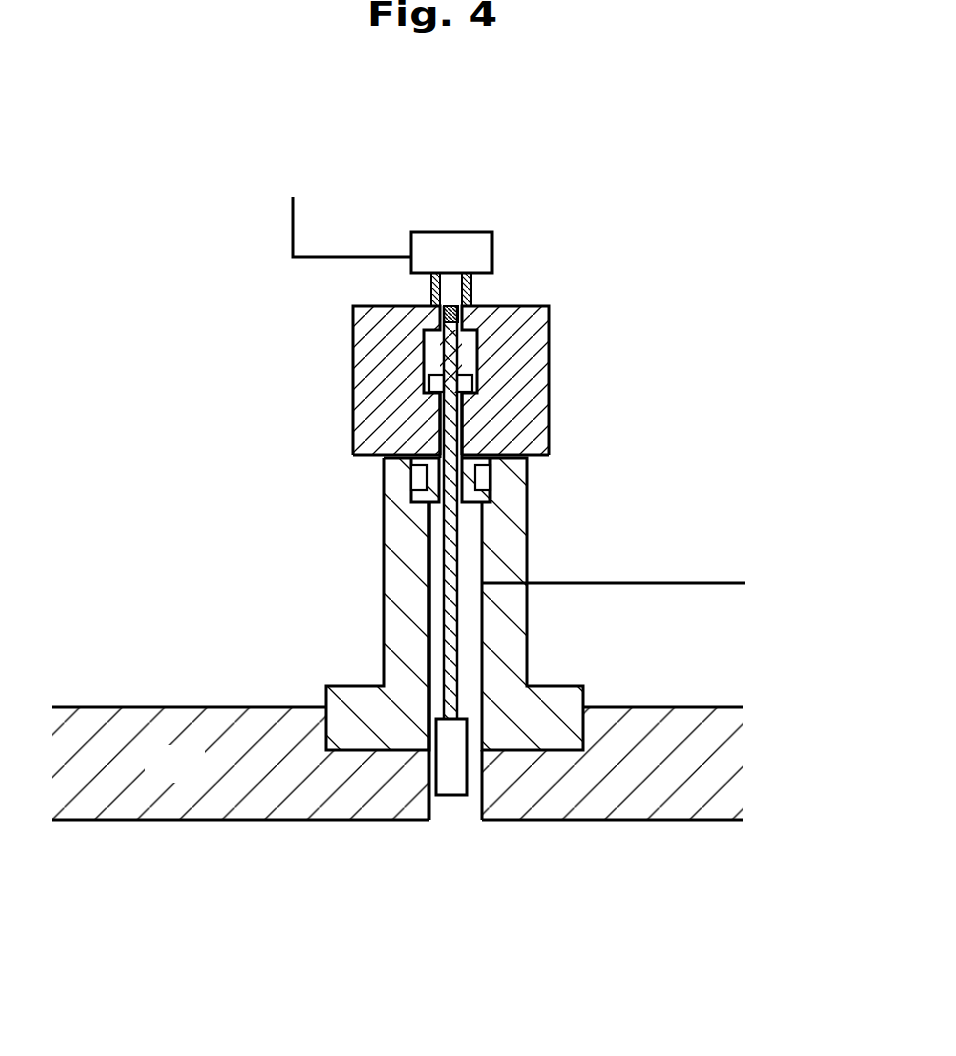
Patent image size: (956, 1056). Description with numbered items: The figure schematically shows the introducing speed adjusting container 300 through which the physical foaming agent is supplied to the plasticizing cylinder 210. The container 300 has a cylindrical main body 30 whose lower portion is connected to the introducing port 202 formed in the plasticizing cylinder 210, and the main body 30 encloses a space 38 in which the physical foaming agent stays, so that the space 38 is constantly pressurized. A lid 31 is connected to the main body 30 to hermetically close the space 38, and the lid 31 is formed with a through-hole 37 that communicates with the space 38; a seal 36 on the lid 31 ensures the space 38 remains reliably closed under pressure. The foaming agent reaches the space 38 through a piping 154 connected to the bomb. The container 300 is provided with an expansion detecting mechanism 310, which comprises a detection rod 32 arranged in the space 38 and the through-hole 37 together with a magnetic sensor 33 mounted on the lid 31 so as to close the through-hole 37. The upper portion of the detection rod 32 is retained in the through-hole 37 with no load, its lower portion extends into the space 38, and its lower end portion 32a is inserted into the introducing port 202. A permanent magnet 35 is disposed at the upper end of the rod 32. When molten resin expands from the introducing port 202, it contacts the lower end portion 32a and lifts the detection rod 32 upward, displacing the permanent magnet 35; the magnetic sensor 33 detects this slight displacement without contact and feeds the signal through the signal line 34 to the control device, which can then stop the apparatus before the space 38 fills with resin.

The introducing speed adjusting container 300 is at (687, 207).
The expansion detecting mechanism 310 is at (593, 183).
The magnetic sensor 33 is at (472, 242).
The signal line 34 is at (293, 222).
The permanent magnet 35 is at (450, 308).
The lid 31 is at (380, 395).
The through-hole 37 is at (438, 420).
The seal 36 is at (417, 473).
The cylindrical main body 30 is at (528, 715).
The space 38 is at (437, 607).
The detection rod 32 is at (450, 578).
The lower end portion 32a is at (445, 777).
The piping 154 is at (683, 582).
The plasticizing cylinder 210 is at (195, 776).
The introducing port 202 is at (452, 812).